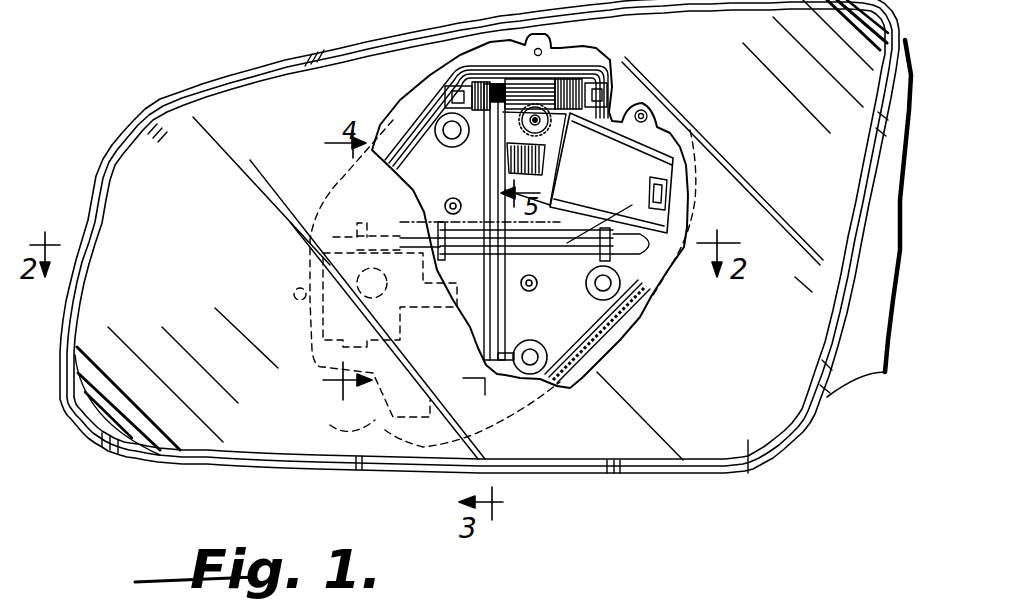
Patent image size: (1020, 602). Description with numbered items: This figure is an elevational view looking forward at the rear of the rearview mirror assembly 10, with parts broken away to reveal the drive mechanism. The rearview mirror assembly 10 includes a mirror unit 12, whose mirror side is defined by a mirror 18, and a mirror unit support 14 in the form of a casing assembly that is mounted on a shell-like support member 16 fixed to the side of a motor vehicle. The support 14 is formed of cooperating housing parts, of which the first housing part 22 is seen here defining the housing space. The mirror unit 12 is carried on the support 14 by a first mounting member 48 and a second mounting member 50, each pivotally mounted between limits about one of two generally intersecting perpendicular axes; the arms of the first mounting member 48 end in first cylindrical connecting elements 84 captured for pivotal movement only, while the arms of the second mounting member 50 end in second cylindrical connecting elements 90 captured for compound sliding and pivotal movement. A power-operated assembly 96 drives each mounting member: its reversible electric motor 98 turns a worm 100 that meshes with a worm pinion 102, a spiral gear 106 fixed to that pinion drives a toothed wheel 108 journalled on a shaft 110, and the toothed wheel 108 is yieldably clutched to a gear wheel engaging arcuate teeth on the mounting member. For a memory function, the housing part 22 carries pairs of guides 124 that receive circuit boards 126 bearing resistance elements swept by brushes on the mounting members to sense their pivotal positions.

The rearview mirror assembly 10 is at (183, 86).
The mirror unit 12 is at (202, 459).
The mirror unit support 14 is at (620, 332).
The support member 16 is at (633, 468).
The mirror 18 is at (748, 470).
The first housing part 22 is at (407, 132).
The first mounting member 48 is at (572, 233).
The second mounting member 50 is at (506, 320).
The first cylindrical connecting element 84 is at (648, 260).
The second cylindrical connecting element 90 is at (450, 70).
The power-operated assembly 96 is at (656, 175).
The reversible electric motor 98 is at (655, 117).
The worm 100 is at (505, 100).
The worm pinion 102 is at (483, 176).
The spiral gear 106 is at (450, 150).
The toothed wheel 108 is at (548, 80).
The shaft 110 is at (593, 93).
The guides 124 is at (452, 327).
The circuit board 126 is at (532, 286).